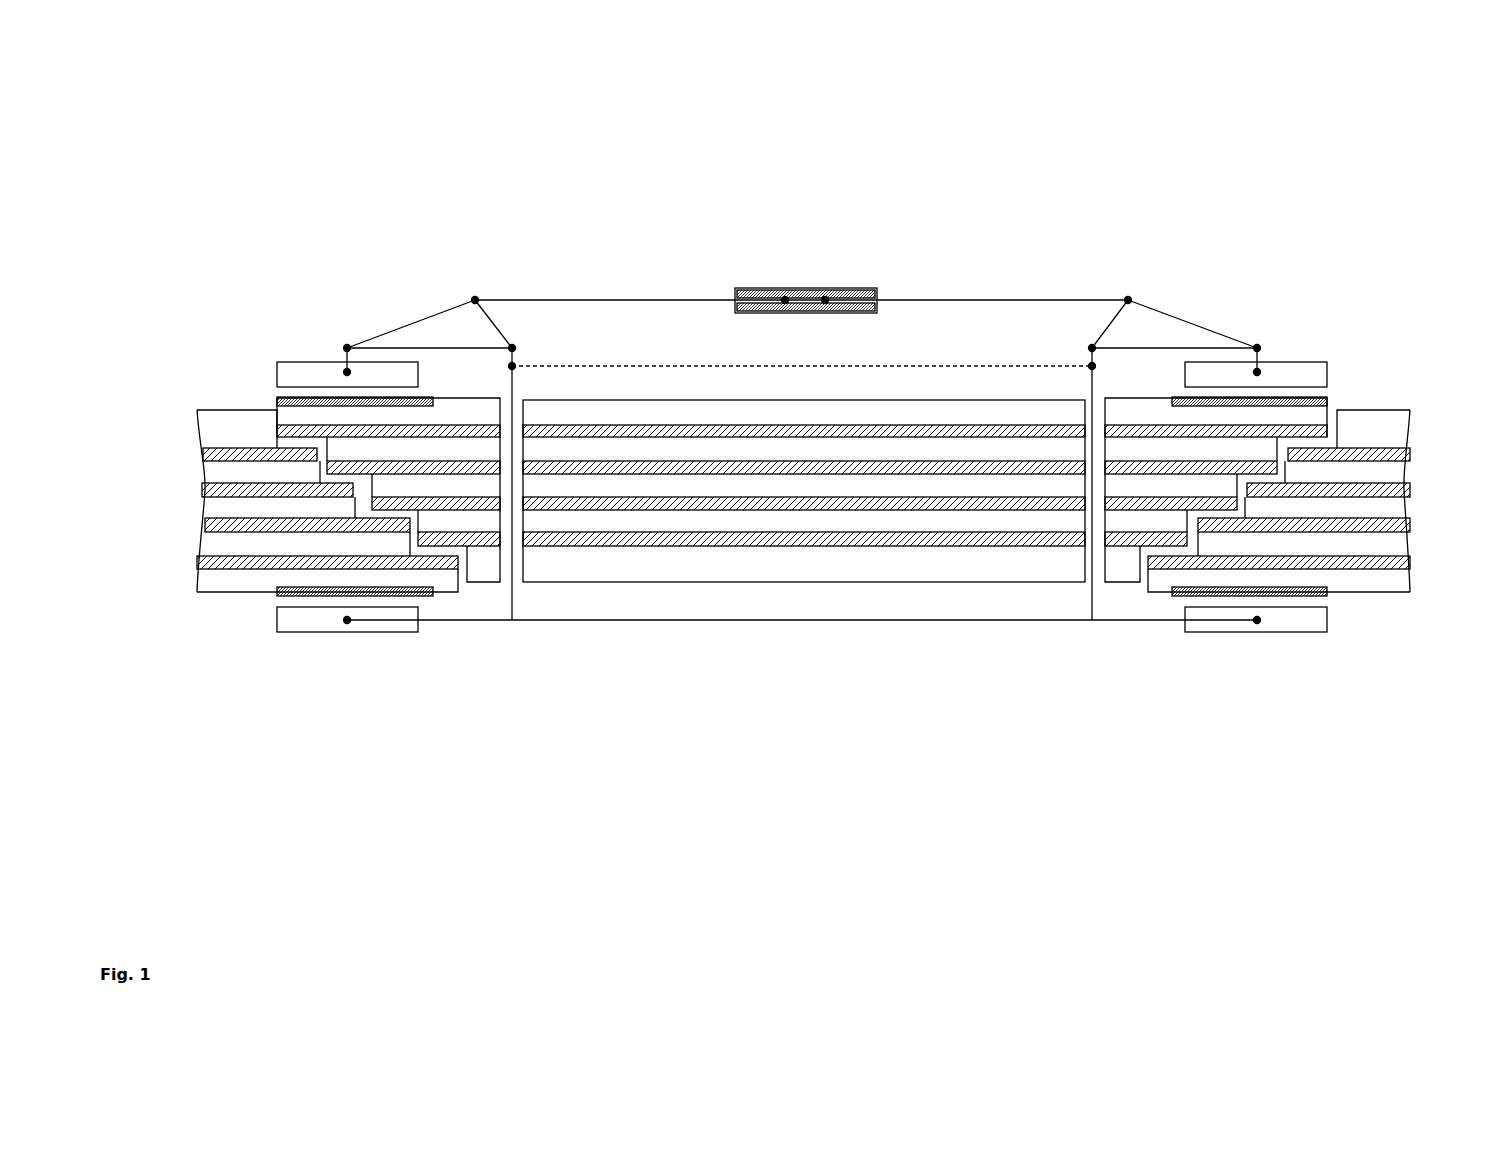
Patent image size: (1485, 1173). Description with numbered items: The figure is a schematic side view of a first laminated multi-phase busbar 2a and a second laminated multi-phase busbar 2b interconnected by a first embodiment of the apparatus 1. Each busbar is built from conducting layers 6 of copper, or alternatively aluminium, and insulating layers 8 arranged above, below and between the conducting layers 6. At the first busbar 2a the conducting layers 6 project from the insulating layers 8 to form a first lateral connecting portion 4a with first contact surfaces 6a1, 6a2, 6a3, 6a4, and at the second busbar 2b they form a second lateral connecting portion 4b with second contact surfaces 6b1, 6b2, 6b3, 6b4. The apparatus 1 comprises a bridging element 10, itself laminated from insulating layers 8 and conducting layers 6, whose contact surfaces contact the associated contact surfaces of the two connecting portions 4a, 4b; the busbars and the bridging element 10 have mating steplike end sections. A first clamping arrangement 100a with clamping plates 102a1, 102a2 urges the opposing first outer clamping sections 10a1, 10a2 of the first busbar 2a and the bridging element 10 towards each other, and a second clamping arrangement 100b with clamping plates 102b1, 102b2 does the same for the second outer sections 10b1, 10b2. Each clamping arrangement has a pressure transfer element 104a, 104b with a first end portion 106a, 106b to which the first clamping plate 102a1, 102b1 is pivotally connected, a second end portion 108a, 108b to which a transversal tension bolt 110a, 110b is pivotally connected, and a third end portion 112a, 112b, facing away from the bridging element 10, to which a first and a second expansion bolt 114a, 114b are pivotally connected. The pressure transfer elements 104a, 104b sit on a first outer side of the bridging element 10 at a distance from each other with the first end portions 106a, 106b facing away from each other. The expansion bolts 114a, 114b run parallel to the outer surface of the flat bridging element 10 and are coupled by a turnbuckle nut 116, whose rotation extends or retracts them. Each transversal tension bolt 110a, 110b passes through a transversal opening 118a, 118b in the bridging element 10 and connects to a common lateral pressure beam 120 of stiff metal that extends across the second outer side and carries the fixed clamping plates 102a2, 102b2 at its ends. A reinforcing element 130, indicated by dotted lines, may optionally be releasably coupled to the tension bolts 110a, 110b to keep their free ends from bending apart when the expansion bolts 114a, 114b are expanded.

The apparatus 1 is at (182, 137).
The first laminated multi-phase busbar 2a is at (198, 633).
The second laminated multi-phase busbar 2b is at (1395, 610).
The first lateral connecting portion 4a is at (275, 408).
The second lateral connecting portion 4b is at (1335, 397).
The conducting layers 6 is at (205, 528).
The first contact surface 6a1 is at (438, 544).
The first contact surface 6a2 is at (382, 507).
The first contact surface 6a3 is at (336, 478).
The first contact surface 6a4 is at (275, 440).
The second contact surface 6b1 is at (1172, 548).
The second contact surface 6b2 is at (1228, 512).
The second contact surface 6b3 is at (1268, 478).
The second contact surface 6b4 is at (1317, 445).
The insulating layers 8 is at (222, 543).
The bridging element 10 is at (761, 565).
The first outer clamping section 10a1 is at (263, 392).
The first outer clamping section 10a2 is at (275, 587).
The second outer clamping section 10b1 is at (1292, 400).
The second outer clamping section 10b2 is at (1327, 592).
The first clamping arrangement 100a is at (383, 252).
The second clamping arrangement 100b is at (1138, 273).
The first clamping plate 102a1 is at (303, 377).
The fixed clamping plate 102a2 is at (315, 622).
The first clamping plate 102b1 is at (1278, 373).
The fixed clamping plate 102b2 is at (1243, 627).
The pressure transfer element 104a is at (417, 317).
The pressure transfer element 104b is at (1168, 312).
The first end portion 106a is at (338, 338).
The first end portion 106b is at (1252, 337).
The second end portion 108a is at (522, 345).
The second end portion 108b is at (1083, 340).
The transversal tension bolt 110a is at (515, 590).
The transversal tension bolt 110b is at (1088, 592).
The third end portion 112a is at (472, 293).
The third end portion 112b is at (1113, 293).
The first expansion bolt 114a is at (530, 299).
The second expansion bolt 114b is at (915, 299).
The turnbuckle nut 116 is at (762, 290).
The transversal opening 118a is at (522, 387).
The transversal opening 118b is at (1083, 387).
The common lateral pressure beam 120 is at (933, 620).
The reinforcing element 130 is at (885, 365).